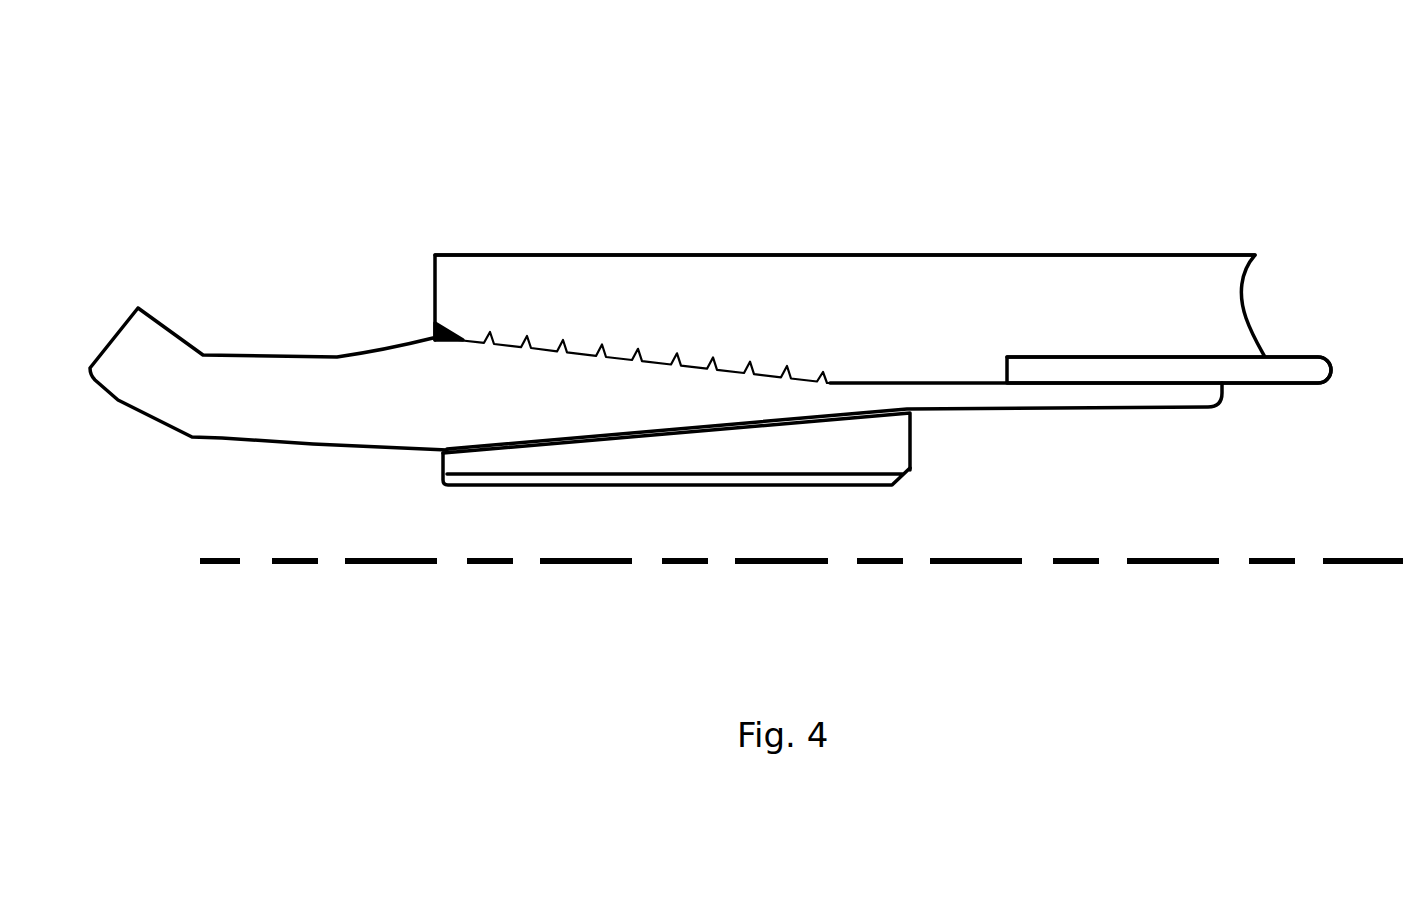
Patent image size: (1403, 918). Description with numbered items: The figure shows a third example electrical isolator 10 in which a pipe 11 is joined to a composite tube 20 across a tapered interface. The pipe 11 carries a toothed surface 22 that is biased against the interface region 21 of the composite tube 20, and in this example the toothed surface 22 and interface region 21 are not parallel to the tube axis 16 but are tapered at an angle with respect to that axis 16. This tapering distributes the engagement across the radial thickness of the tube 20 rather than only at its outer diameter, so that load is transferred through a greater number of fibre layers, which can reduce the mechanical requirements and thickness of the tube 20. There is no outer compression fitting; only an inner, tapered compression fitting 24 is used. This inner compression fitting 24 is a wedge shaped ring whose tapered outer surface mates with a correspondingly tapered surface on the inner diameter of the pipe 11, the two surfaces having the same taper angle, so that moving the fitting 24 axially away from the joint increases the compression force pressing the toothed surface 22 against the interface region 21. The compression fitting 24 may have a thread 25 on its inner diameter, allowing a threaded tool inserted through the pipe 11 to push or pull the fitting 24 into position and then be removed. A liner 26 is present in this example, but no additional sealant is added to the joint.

The electrical isolator 10 is at (1147, 165).
The pipe 11 is at (298, 388).
The tube axis 16 is at (1157, 562).
The composite tube 20 is at (628, 302).
The interface region 21 is at (717, 370).
The toothed surface 22 is at (583, 360).
The inner compression fitting 24 is at (860, 445).
The thread 25 is at (777, 480).
The liner 26 is at (1295, 375).